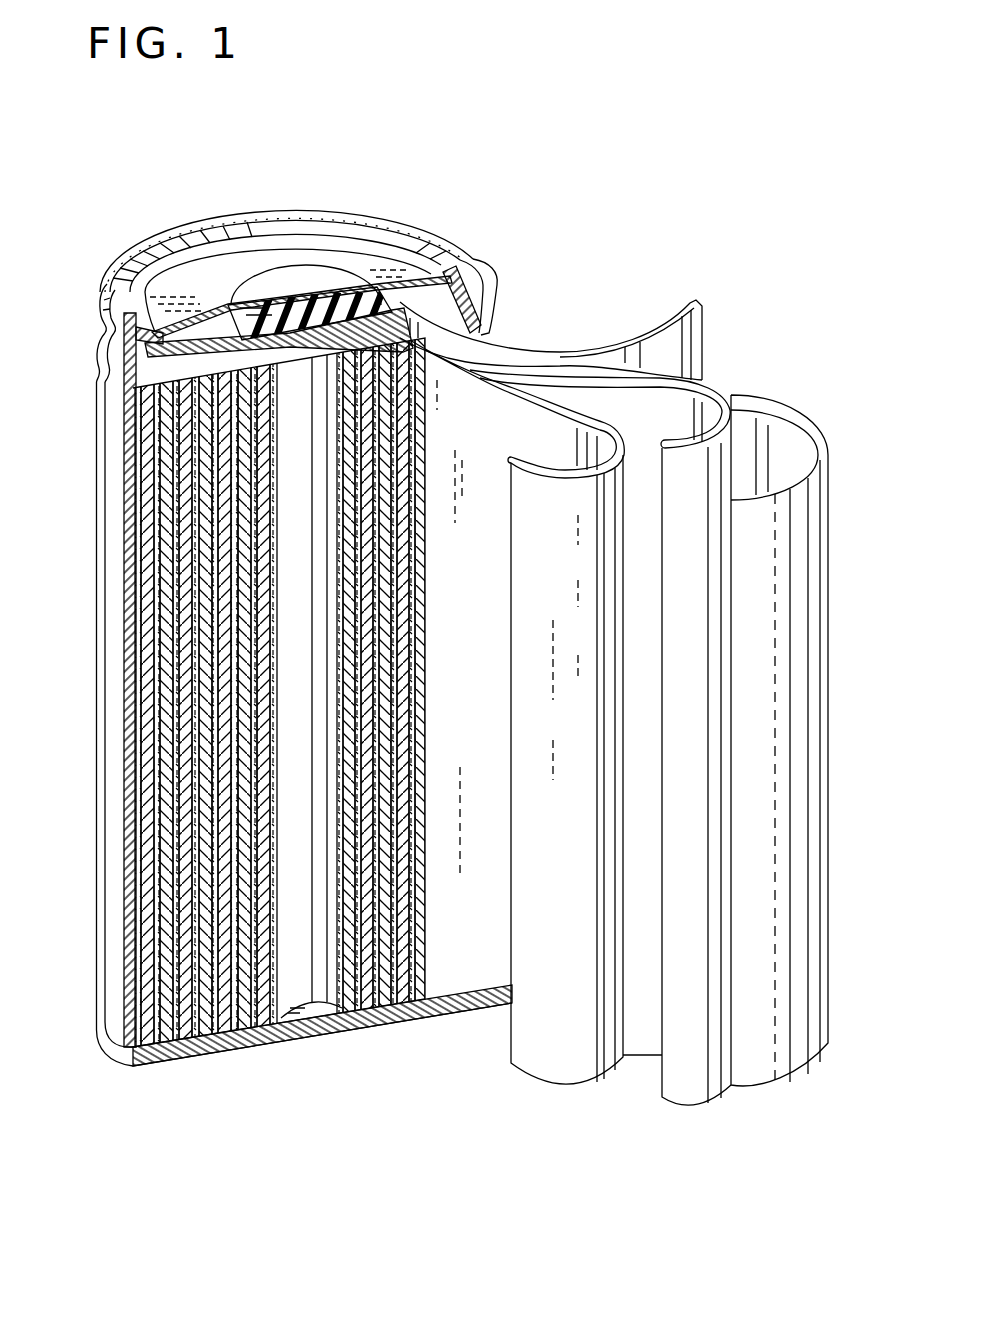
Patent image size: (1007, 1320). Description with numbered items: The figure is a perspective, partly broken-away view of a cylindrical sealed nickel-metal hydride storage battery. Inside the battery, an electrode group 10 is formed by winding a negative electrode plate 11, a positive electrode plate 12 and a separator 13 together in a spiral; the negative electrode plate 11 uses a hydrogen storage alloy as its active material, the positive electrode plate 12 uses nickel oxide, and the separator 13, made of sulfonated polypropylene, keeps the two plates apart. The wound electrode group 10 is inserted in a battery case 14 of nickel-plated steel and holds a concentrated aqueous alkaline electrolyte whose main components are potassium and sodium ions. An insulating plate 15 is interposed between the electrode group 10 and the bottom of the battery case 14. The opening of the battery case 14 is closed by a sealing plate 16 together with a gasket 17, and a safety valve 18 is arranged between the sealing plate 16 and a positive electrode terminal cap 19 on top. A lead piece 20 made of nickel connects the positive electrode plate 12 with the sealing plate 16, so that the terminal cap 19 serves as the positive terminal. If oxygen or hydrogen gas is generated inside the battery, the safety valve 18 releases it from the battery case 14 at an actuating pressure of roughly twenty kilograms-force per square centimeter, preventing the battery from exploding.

The electrode group 10 is at (840, 431).
The negative electrode plate 11 is at (808, 607).
The positive electrode plate 12 is at (603, 927).
The separator 13 is at (708, 755).
The battery case 14 is at (103, 757).
The insulating plate 15 is at (272, 1042).
The sealing plate 16 is at (430, 265).
The gasket 17 is at (103, 303).
The safety valve 18 is at (299, 292).
The positive electrode terminal cap 19 is at (262, 280).
The lead piece 20 is at (103, 379).